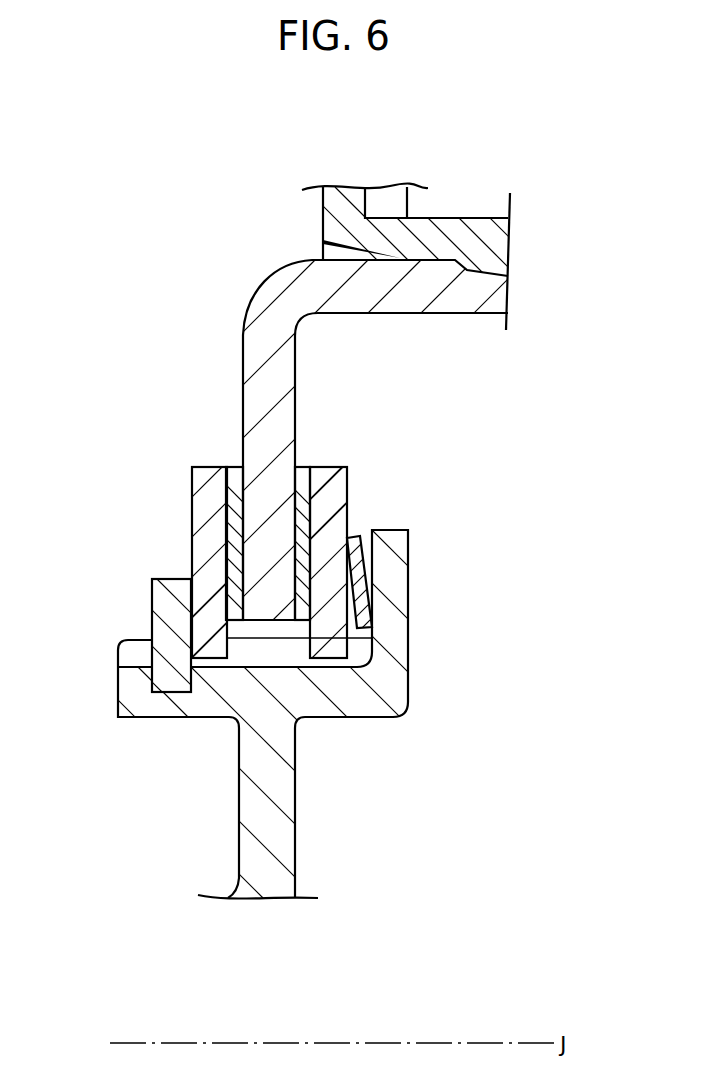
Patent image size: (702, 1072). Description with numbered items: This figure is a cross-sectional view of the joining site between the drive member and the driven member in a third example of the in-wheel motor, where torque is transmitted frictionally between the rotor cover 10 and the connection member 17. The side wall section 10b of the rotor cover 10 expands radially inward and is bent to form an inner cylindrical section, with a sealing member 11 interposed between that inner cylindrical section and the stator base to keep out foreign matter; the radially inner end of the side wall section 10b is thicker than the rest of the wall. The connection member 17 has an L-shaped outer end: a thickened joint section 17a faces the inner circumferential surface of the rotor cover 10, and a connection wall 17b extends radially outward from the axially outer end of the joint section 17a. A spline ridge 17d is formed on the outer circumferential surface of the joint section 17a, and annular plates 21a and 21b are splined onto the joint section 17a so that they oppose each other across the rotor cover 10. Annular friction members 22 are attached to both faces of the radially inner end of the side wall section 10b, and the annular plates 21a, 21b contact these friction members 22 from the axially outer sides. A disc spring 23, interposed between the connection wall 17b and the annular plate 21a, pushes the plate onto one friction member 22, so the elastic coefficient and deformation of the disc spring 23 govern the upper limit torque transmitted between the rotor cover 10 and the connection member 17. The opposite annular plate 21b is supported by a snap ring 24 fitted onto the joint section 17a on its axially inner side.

The rotor cover 10 is at (272, 383).
The side wall section 10b is at (460, 298).
The sealing member 11 is at (338, 207).
The connection member 17 is at (278, 832).
The joint section 17a is at (202, 703).
The connection wall 17b is at (393, 625).
The spline ridge 17d is at (135, 652).
The annular plate 21a is at (334, 483).
The annular plate 21b is at (207, 493).
The friction members 22 is at (235, 467).
The disc spring 23 is at (353, 537).
The snap ring 24 is at (165, 600).